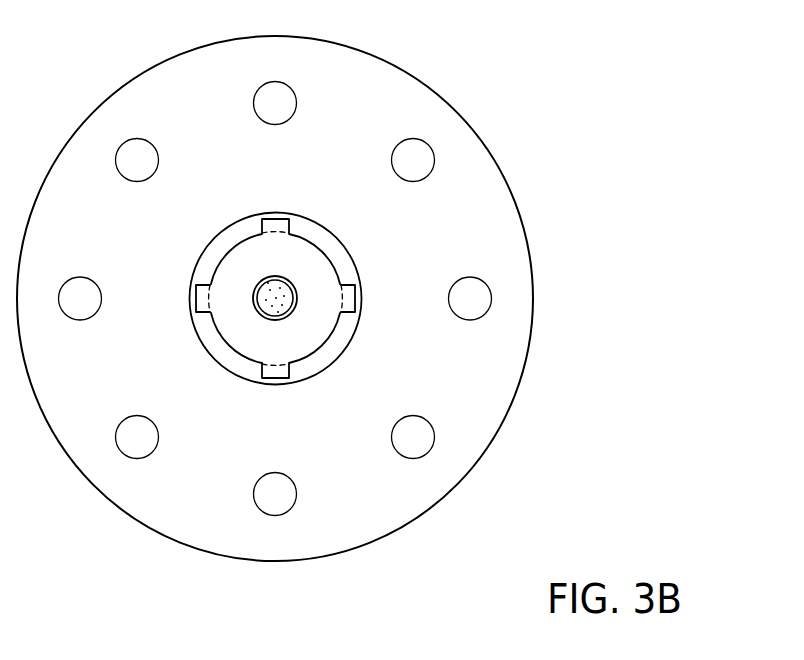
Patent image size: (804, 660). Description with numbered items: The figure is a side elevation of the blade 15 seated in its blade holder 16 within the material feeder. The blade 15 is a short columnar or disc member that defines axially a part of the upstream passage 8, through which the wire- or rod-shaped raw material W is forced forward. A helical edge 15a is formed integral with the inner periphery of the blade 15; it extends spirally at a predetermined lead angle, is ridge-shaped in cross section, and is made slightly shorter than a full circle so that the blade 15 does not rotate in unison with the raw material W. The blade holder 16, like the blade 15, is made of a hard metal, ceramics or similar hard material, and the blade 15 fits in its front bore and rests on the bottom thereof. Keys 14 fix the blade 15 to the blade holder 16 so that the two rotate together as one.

The upstream passage 8 is at (277, 279).
The keys 14 is at (274, 219).
The blade 15 is at (227, 327).
The helical edge 15a is at (268, 319).
The blade holder 16 is at (375, 357).
The raw material W is at (275, 312).